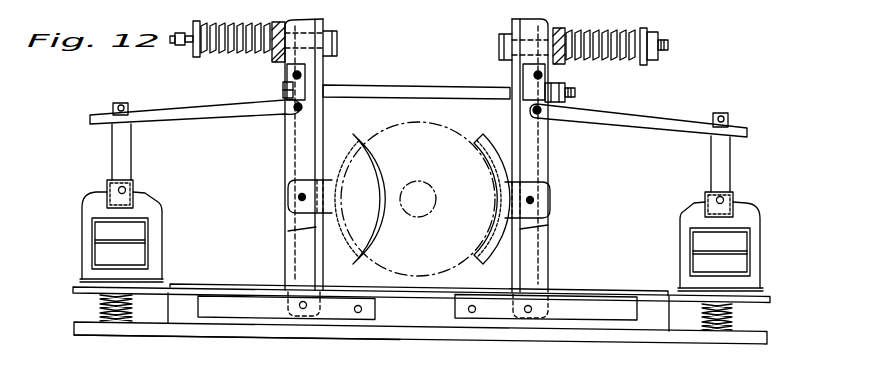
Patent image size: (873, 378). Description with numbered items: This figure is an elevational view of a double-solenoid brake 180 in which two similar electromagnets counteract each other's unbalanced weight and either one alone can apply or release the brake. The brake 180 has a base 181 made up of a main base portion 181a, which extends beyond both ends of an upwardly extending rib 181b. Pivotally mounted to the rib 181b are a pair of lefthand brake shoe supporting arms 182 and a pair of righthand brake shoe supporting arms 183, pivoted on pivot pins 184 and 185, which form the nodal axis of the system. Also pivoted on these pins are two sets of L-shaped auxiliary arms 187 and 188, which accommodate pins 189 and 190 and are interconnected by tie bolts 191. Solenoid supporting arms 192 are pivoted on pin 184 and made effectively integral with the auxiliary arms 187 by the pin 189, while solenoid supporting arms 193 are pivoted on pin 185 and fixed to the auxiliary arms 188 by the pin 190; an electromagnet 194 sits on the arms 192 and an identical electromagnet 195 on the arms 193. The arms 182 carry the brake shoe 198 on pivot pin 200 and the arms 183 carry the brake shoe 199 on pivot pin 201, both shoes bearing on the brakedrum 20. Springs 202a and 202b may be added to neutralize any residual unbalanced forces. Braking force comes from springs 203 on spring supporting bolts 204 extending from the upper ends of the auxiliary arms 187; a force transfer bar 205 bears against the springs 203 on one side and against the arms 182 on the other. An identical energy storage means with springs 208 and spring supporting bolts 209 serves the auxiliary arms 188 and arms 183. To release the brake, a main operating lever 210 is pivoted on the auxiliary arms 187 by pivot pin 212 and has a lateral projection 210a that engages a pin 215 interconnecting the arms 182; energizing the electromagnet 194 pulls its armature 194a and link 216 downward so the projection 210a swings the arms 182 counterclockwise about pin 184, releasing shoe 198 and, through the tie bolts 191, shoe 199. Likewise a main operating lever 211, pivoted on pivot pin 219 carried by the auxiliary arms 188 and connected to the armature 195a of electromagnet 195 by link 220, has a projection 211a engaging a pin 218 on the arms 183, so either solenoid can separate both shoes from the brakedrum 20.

The brakedrum 20 is at (417, 126).
The brake 180 is at (422, 365).
The base 181 is at (556, 331).
The main base portion 181a is at (240, 336).
The upwardly extending rib 181b is at (188, 283).
The lefthand brake shoe supporting arms 182 is at (287, 136).
The righthand brake shoe supporting arms 183 is at (550, 148).
The pivot pin 184 is at (303, 309).
The pivot pin 185 is at (527, 313).
The auxiliary arms 187 is at (325, 25).
The auxiliary arms 188 is at (510, 24).
The pin 189 is at (358, 313).
The pin 190 is at (472, 313).
The tie bolts 191 is at (426, 76).
The solenoid supporting arms 192 is at (72, 287).
The solenoid supporting arms 193 is at (770, 300).
The electromagnet 194 is at (91, 206).
The armature 194a is at (118, 182).
The electromagnet 195 is at (759, 236).
The armature 195a is at (720, 192).
The brake shoe 198 is at (355, 134).
The brake shoe 199 is at (481, 140).
The pivot pin 200 is at (300, 196).
The pivot pin 201 is at (533, 200).
The spring 202a is at (100, 303).
The spring 202b is at (732, 316).
The springs 203 is at (230, 27).
The spring supporting bolts 204 is at (178, 42).
The force transfer bar 205 is at (279, 24).
The springs 208 is at (581, 32).
The spring supporting bolts 209 is at (670, 45).
The main operating lever 210 is at (199, 96).
The lateral projection 210a is at (308, 70).
The main operating lever 211 is at (667, 100).
The projection 211a is at (503, 72).
The pivot pin 212 is at (293, 104).
The pin 215 is at (292, 75).
The link 216 is at (112, 138).
The pin 218 is at (545, 75).
The pivot pin 219 is at (542, 110).
The link 220 is at (713, 152).